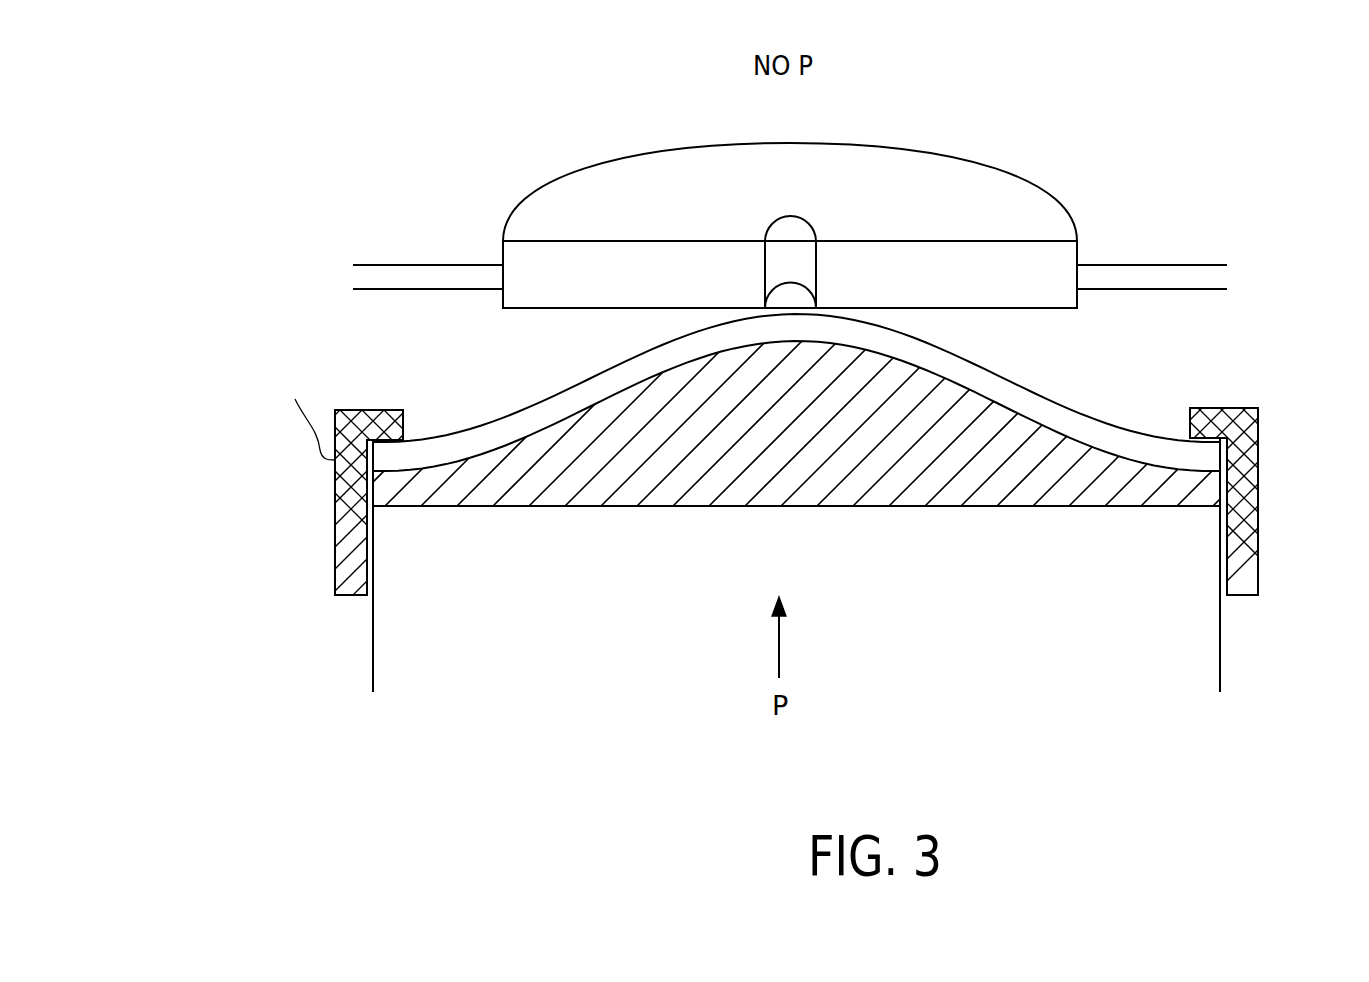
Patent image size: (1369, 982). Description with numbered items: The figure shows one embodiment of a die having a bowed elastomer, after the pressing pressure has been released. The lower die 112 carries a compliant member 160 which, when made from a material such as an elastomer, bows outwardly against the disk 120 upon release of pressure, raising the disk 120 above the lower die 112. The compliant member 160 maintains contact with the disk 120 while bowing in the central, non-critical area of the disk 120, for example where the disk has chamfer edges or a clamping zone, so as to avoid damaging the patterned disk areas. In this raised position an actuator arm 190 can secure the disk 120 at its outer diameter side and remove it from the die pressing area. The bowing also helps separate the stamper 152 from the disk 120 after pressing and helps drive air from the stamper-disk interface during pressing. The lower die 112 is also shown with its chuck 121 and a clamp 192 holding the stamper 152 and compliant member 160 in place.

The lower die 112 is at (210, 712).
The disk 120 is at (720, 290).
The chuck 121 is at (487, 634).
The stamper 152 is at (1033, 399).
The compliant member 160 is at (902, 475).
The actuator arm 190 is at (383, 263).
The clamp 192 is at (1260, 458).